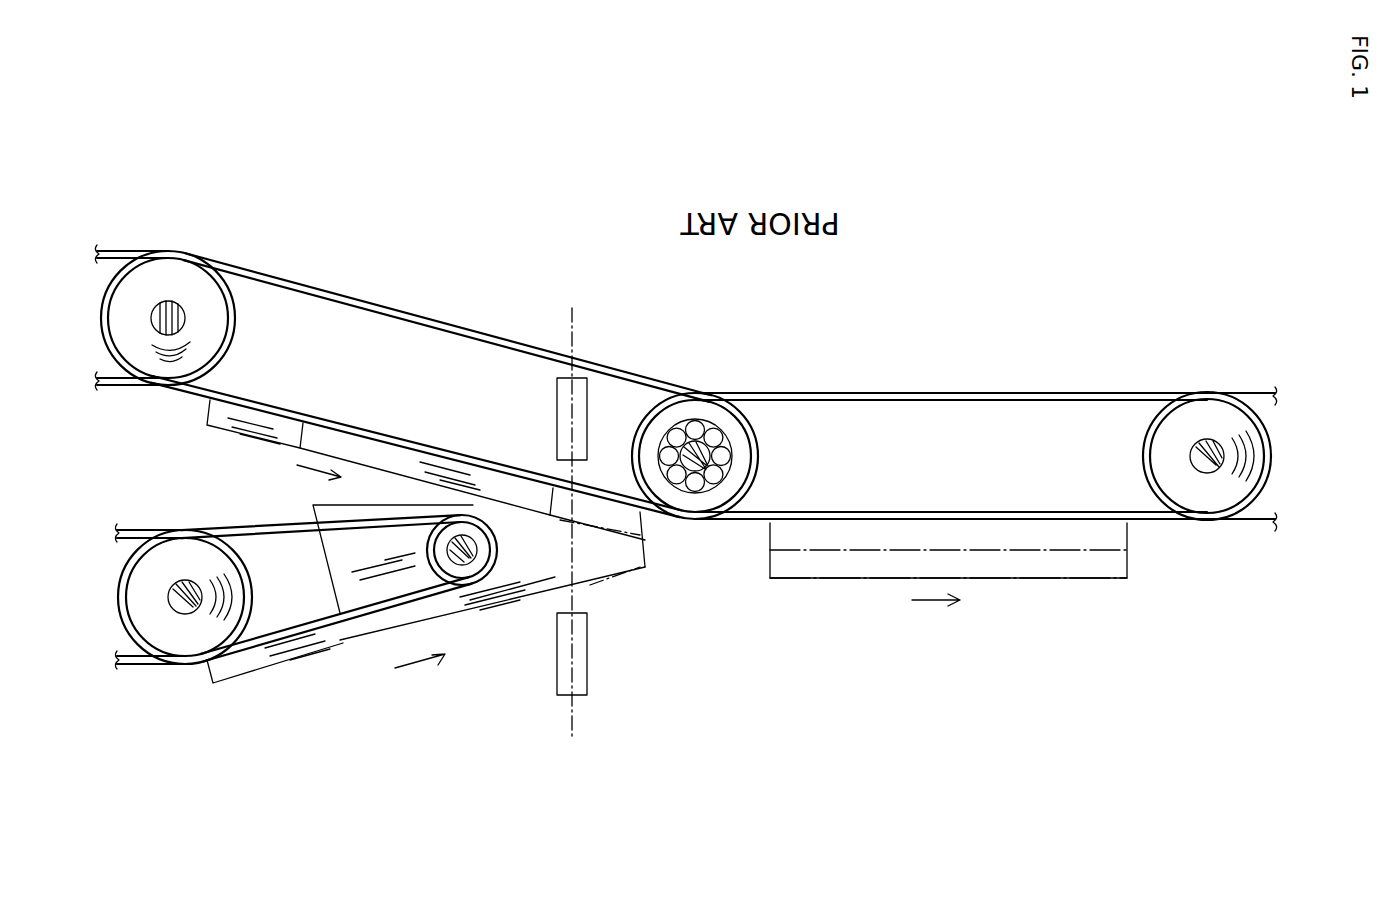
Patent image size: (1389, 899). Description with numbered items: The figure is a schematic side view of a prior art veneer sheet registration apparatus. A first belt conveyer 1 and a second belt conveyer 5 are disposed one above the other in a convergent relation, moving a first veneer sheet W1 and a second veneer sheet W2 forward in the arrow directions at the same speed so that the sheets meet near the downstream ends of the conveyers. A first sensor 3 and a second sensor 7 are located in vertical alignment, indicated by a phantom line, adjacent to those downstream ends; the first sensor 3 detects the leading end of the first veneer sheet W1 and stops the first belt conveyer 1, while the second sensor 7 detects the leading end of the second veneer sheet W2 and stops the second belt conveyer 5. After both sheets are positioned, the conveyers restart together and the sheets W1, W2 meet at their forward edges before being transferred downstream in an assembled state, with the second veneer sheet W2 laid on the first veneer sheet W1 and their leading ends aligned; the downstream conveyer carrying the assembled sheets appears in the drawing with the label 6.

The first belt conveyer 1 is at (353, 427).
The first sensor 3 is at (582, 395).
The second belt conveyer 5 is at (308, 622).
The third conveyor 6 is at (940, 515).
The second sensor 7 is at (555, 680).
The first veneer sheet W1 is at (220, 427).
The second veneer sheet W2 is at (260, 660).